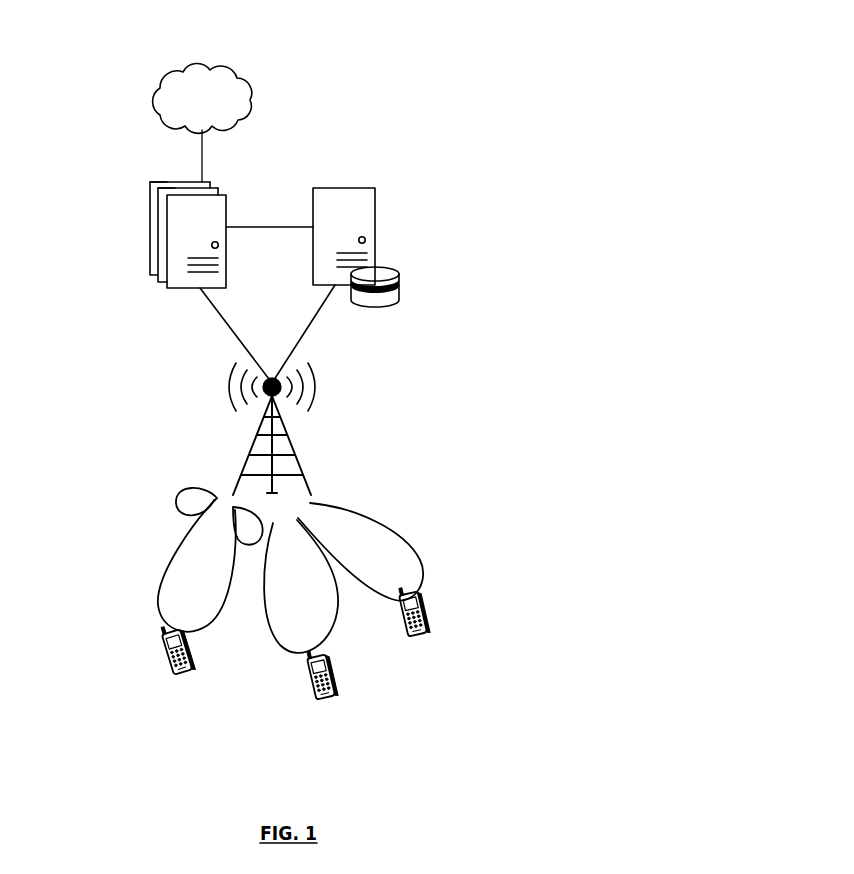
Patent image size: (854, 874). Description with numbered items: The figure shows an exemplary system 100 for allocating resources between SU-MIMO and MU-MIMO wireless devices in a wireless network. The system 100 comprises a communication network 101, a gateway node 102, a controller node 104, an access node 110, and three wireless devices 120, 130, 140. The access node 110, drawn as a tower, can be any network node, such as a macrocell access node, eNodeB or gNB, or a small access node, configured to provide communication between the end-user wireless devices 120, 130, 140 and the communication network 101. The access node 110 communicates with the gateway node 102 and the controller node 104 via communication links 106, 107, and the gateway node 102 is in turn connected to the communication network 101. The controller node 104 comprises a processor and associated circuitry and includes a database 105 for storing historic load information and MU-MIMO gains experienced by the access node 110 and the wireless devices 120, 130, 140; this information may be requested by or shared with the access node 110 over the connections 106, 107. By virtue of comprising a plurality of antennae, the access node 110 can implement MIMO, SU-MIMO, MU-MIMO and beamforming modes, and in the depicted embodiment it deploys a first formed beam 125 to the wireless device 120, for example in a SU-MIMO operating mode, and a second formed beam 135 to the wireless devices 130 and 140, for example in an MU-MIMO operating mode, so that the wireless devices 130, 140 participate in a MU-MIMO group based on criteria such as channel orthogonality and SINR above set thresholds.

The system 100 is at (389, 42).
The communication network 101 is at (220, 110).
The gateway node 102 is at (167, 182).
The controller node 104 is at (374, 188).
The database 105 is at (400, 268).
The communication link 106 is at (312, 323).
The communication link 107 is at (219, 313).
The access node 110 is at (248, 461).
The wireless device 120 is at (160, 636).
The first formed beam 125 is at (167, 568).
The wireless device 130 is at (337, 677).
The second formed beam 135 is at (363, 513).
The wireless device 140 is at (430, 612).